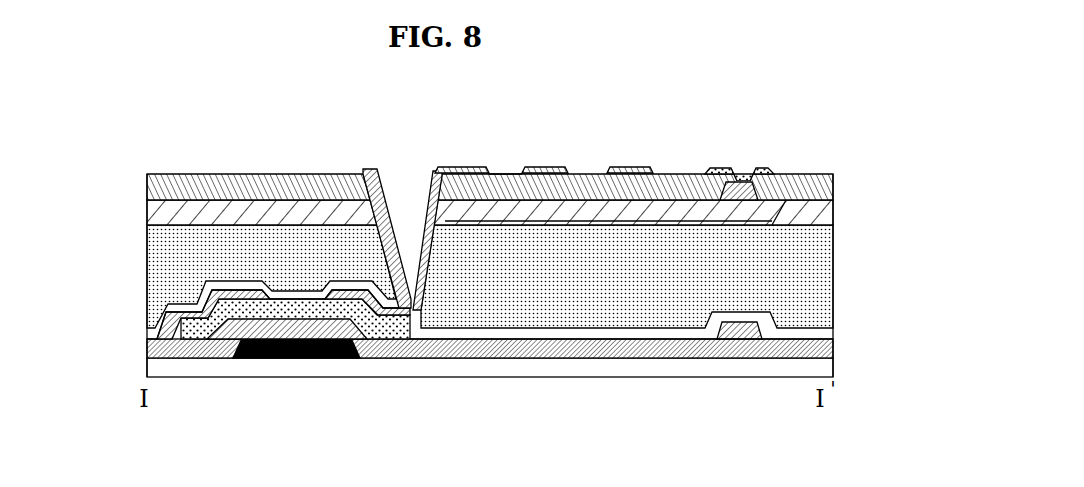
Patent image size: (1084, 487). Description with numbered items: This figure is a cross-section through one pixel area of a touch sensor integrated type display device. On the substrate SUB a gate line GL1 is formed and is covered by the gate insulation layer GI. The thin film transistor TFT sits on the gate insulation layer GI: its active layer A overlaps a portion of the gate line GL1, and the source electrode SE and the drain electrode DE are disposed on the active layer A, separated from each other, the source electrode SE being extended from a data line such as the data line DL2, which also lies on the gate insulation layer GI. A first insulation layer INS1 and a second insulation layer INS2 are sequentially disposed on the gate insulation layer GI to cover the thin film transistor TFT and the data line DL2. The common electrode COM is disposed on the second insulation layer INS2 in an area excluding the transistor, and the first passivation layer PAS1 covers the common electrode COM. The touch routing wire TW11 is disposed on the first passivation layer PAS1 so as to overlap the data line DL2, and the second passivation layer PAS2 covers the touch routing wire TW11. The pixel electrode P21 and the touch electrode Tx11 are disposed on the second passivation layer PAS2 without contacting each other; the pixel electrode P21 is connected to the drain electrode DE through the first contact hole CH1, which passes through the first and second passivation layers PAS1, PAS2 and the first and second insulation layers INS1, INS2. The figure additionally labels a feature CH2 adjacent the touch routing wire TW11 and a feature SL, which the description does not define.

The first substrate SUB is at (833, 371).
The gate insulation layer GI is at (833, 351).
The gate line GL1 is at (293, 358).
The data line DL2 is at (741, 330).
The active layer A is at (207, 341).
The thin film transistor TFT is at (176, 284).
The source electrode SE is at (243, 289).
The drain electrode DE is at (349, 289).
The first insulation layer INS1 is at (833, 333).
The second insulation layer INS2 is at (833, 281).
The first passivation layer PAS1 is at (833, 213).
The common electrode COM is at (678, 221).
The second passivation layer PAS2 is at (833, 188).
The touch electrode Tx11 is at (765, 172).
The second contact hole CH2 is at (740, 163).
The touch routing wire TW11 is at (789, 183).
The first contact hole CH1 is at (411, 169).
The pixel electrode P21 is at (468, 167).
The slit SL is at (506, 171).